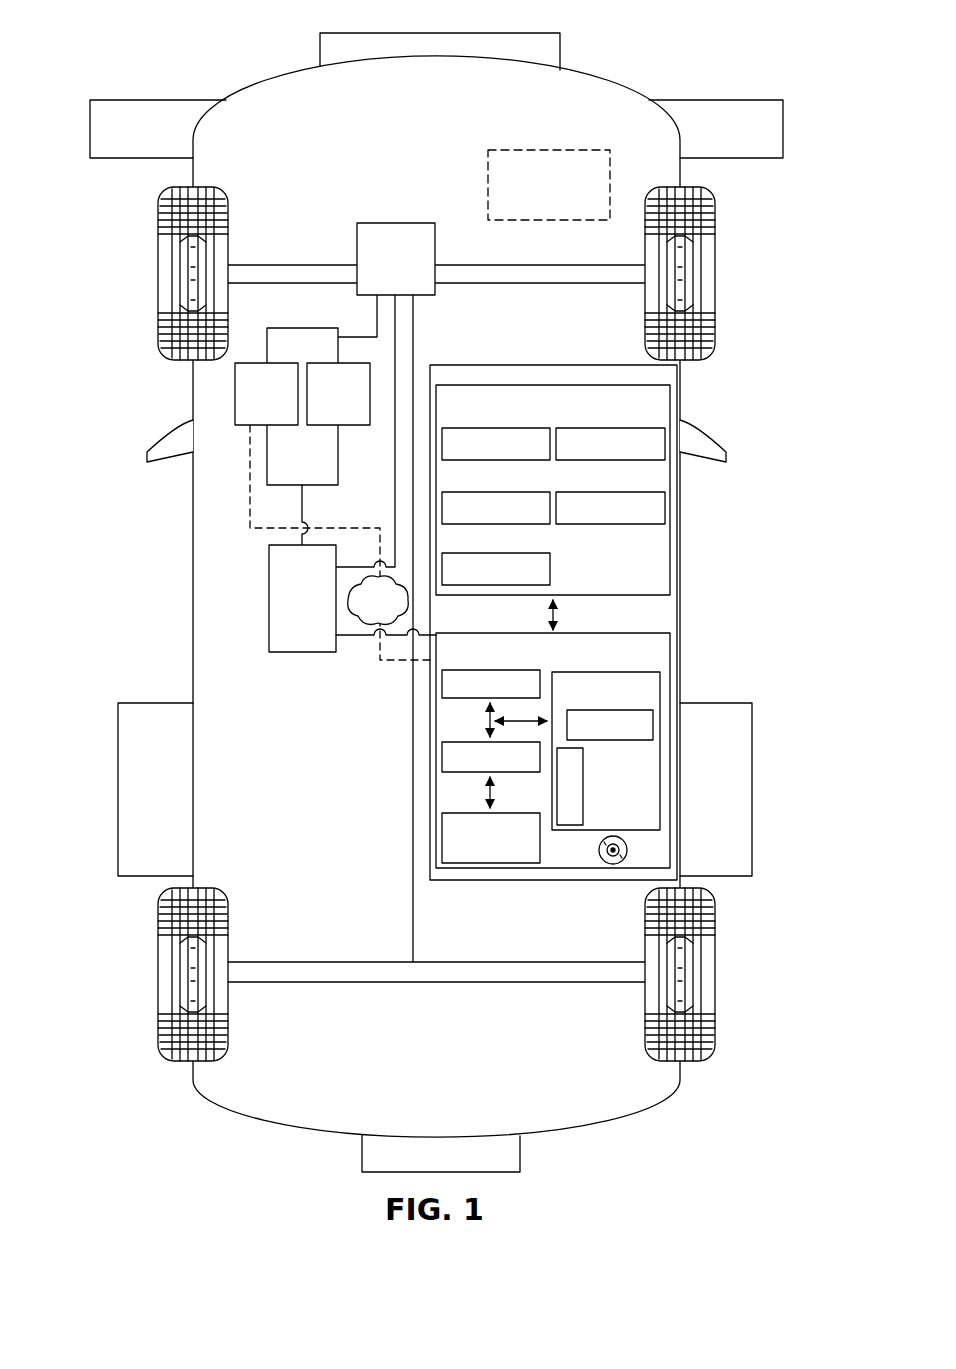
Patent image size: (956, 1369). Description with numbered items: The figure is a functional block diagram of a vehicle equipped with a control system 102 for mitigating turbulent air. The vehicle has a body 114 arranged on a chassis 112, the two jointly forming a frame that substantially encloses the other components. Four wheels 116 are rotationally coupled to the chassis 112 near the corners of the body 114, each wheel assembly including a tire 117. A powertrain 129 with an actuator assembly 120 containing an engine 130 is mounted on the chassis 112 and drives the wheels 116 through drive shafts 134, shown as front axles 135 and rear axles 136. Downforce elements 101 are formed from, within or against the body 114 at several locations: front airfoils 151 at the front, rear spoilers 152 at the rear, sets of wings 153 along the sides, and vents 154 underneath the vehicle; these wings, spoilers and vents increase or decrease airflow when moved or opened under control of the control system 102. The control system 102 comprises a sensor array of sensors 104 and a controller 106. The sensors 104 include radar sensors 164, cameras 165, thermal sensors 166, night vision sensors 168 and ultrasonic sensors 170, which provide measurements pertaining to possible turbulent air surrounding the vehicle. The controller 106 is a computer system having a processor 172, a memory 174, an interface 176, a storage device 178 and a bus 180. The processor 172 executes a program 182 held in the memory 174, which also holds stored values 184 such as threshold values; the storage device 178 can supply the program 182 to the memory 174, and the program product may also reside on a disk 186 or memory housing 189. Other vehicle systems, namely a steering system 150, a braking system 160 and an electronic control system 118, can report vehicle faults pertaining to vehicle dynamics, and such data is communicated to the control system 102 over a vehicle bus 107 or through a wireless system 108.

The downforce elements 101 is at (190, 38).
The front airfoils 151 is at (350, 33).
The rear spoilers 152 is at (520, 1152).
The wings 153 is at (160, 100).
The vents 154 is at (550, 150).
The control system 102 is at (503, 365).
The sensors 104 is at (600, 595).
The controller 106 is at (465, 633).
The vehicle bus 107 is at (267, 455).
The wireless system 108 is at (352, 596).
The chassis 112 is at (410, 950).
The body 114 is at (193, 576).
The wheels 116 is at (438, 624).
The tire 117 is at (158, 272).
The electronic control system 118 is at (269, 572).
The actuator assembly 120 is at (420, 628).
The powertrain 129 is at (383, 223).
The engine 130 is at (405, 245).
The drive shafts 134 is at (436, 606).
The front axles 135 is at (290, 265).
The rear axles 136 is at (352, 982).
The steering system 150 is at (235, 386).
The braking system 160 is at (312, 363).
The radar sensors 164 is at (503, 428).
The cameras 165 is at (600, 428).
The thermal sensors 166 is at (503, 492).
The night vision sensors 168 is at (600, 492).
The ultrasonic sensors 170 is at (503, 553).
The processor 172 is at (442, 690).
The memory 174 is at (600, 672).
The interface 176 is at (442, 758).
The storage device 178 is at (442, 850).
The bus 180 is at (487, 722).
The program 182 is at (600, 710).
The stored values 184 is at (563, 828).
The disk 186 is at (610, 866).
The memory housing 189 is at (597, 832).